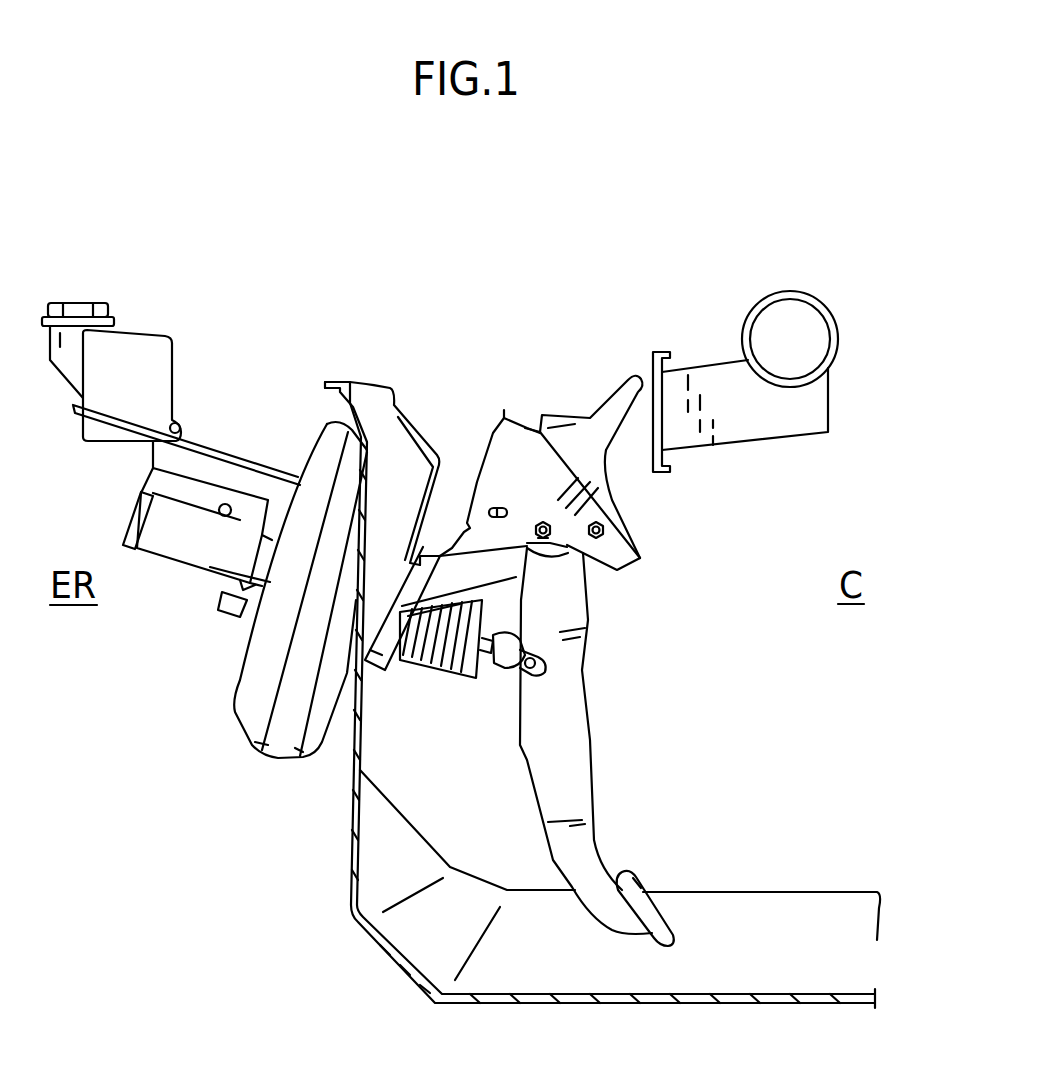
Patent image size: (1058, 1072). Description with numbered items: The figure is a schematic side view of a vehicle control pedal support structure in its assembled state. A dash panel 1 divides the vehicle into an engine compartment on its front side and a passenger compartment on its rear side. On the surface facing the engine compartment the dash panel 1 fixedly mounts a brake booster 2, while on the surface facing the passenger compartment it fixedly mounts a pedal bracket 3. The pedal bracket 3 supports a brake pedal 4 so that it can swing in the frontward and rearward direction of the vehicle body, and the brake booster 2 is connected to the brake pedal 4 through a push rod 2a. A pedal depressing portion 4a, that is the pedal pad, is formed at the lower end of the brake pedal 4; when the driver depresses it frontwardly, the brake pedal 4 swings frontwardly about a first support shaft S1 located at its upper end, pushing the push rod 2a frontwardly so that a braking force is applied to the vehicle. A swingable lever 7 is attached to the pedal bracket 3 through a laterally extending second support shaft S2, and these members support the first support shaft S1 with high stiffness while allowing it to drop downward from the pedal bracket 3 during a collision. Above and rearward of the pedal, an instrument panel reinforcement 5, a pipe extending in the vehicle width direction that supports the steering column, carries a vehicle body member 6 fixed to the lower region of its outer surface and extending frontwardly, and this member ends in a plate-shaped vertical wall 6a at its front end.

The dash panel 1 is at (350, 860).
The brake booster 2 is at (235, 712).
The push rod 2a is at (500, 673).
The pedal bracket 3 is at (503, 478).
The brake pedal 4 is at (572, 717).
The pedal depressing portion 4a is at (652, 908).
The instrument panel reinforcement 5 is at (770, 292).
The vehicle body member 6 is at (750, 425).
The vertical wall 6a is at (653, 353).
The swingable lever 7 is at (578, 425).
The first support shaft S1 is at (567, 548).
The second support shaft S2 is at (603, 533).